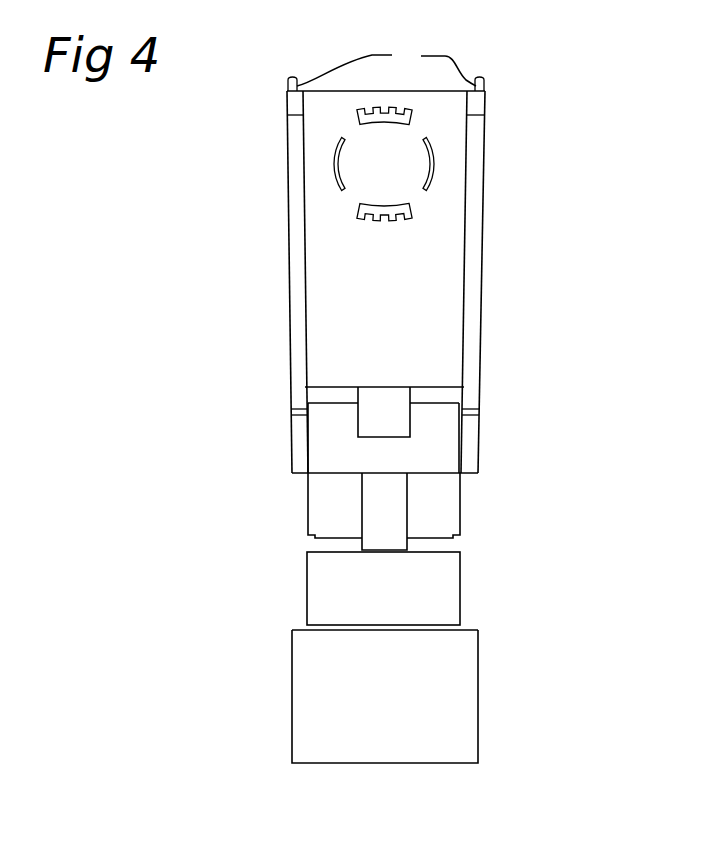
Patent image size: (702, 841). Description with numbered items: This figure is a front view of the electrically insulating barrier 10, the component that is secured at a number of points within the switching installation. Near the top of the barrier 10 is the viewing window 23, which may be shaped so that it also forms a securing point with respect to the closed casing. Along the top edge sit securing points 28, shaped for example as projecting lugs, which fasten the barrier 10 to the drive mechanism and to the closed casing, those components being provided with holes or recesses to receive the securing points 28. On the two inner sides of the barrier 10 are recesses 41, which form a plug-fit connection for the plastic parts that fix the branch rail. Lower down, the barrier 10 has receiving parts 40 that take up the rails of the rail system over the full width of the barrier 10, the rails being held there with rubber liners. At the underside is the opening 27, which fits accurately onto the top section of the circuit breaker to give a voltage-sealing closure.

The electrically insulating barrier 10 is at (505, 68).
The viewing window 23 is at (393, 178).
The opening 27 is at (450, 693).
The securing points 28 is at (386, 64).
The receiving parts 40 is at (442, 590).
The recesses 41 is at (293, 182).